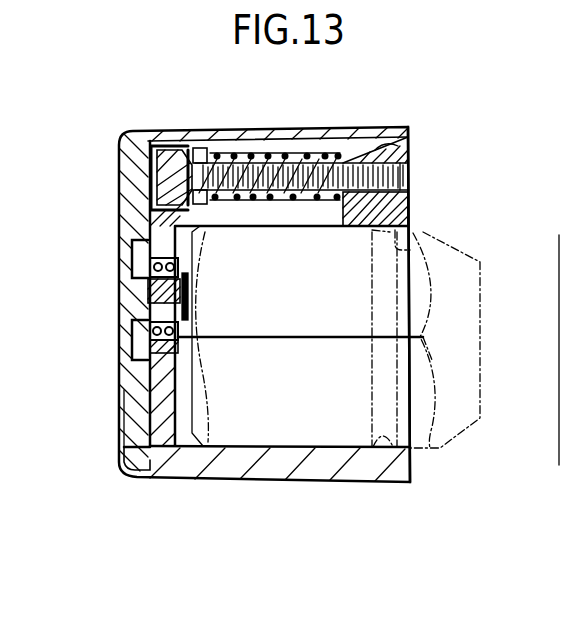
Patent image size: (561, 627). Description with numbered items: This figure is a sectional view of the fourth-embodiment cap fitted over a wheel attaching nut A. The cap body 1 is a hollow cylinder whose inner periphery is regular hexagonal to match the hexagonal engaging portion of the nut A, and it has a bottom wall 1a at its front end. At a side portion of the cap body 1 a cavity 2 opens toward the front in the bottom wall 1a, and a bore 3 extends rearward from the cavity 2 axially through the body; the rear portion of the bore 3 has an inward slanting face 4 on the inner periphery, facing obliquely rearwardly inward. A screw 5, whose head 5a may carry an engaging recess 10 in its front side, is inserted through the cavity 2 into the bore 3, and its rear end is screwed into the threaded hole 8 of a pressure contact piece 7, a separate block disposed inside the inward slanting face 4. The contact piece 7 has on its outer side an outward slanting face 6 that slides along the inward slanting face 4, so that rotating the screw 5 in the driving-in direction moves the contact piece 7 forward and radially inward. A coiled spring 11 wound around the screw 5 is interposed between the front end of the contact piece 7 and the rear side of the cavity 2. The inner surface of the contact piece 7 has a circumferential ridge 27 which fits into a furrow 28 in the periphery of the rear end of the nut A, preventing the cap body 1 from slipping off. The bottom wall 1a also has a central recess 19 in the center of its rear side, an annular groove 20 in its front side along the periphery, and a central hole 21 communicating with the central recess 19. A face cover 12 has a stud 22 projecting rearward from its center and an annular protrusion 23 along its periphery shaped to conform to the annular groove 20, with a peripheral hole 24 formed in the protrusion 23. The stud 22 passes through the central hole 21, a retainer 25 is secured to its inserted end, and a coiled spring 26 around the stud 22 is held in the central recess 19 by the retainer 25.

The cap body 1 is at (283, 470).
The bottom wall 1a is at (160, 422).
The cavity 2 is at (140, 143).
The bore 3 is at (237, 148).
The inward slanting face 4 is at (404, 153).
The screw 5 is at (266, 168).
The head 5a is at (182, 148).
The outward slanting face 6 is at (364, 152).
The pressure contact piece 7 is at (397, 205).
The threaded hole 8 is at (404, 174).
The engaging recess 10 is at (150, 166).
The coiled spring 11 is at (307, 157).
The face cover 12 is at (132, 245).
The central recess 19 is at (180, 262).
The annular groove 20 is at (123, 448).
The central hole 21 is at (132, 323).
The stud 22 is at (182, 297).
The annular protrusion 23 is at (138, 200).
The peripheral hole 24 is at (126, 400).
The retainer 25 is at (182, 323).
The coiled spring 26 is at (177, 347).
The ridge 27 is at (410, 248).
The furrow 28 is at (383, 450).
The wheel attaching nut A is at (430, 448).